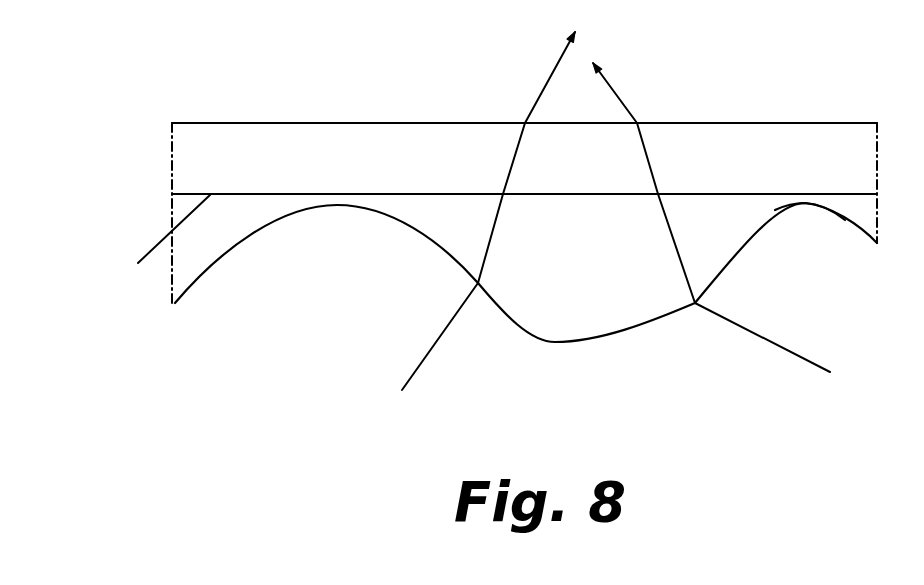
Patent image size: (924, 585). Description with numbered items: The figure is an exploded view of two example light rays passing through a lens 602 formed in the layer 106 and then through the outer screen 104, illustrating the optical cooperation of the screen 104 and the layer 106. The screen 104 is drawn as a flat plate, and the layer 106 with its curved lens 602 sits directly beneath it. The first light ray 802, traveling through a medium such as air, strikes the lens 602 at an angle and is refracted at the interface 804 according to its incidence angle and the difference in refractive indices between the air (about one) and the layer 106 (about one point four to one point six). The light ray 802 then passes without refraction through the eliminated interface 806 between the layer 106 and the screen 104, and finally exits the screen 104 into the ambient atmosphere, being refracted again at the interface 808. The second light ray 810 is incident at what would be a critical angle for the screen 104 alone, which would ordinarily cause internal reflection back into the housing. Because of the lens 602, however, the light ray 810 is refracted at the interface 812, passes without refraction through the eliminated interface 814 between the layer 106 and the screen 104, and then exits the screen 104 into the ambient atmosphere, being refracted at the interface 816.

The screen 104 is at (807, 123).
The layer 106 is at (805, 203).
The lens 602 is at (570, 342).
The light ray 802 is at (432, 350).
The interface 804 is at (480, 283).
The eliminated interface 806 is at (503, 194).
The interface 808 is at (524, 125).
The light ray 810 is at (767, 342).
The interface 812 is at (695, 303).
The eliminated interface 814 is at (658, 194).
The interface 816 is at (638, 125).